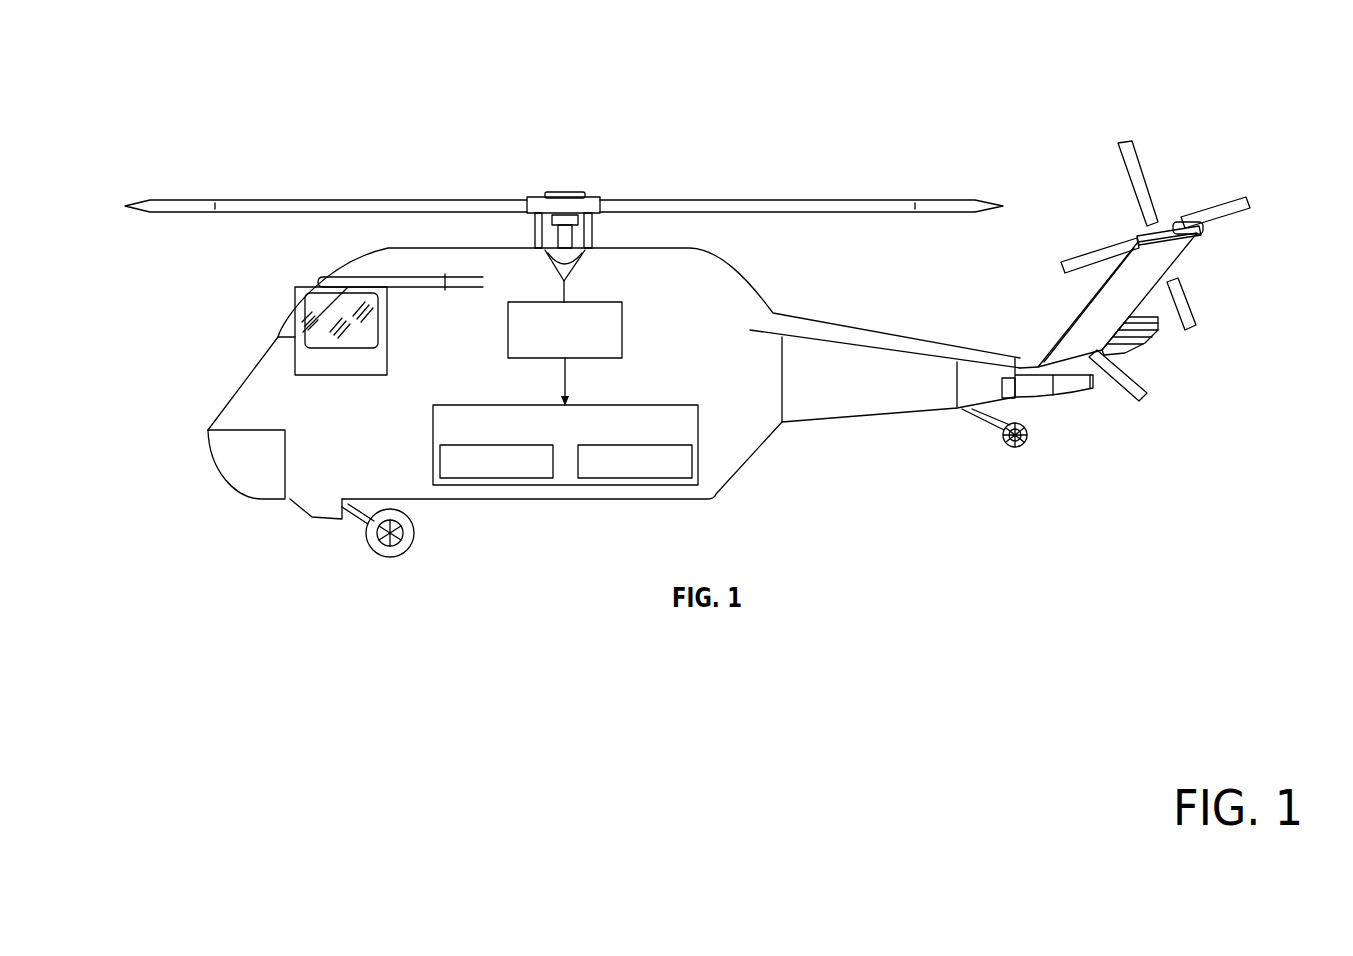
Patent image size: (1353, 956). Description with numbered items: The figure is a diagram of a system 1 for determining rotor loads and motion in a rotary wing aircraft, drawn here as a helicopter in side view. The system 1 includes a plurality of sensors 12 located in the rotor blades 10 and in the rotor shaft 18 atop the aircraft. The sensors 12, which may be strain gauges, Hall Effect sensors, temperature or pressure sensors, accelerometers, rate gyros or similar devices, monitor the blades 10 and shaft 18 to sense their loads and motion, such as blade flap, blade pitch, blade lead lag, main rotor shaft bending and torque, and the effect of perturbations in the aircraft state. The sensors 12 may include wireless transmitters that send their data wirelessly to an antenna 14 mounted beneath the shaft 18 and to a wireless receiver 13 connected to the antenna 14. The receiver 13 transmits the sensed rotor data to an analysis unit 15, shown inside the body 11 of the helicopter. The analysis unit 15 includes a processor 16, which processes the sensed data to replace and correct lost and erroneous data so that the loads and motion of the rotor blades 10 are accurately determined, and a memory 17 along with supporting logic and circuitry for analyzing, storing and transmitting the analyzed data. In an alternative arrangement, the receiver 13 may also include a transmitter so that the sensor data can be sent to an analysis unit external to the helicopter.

The system 1 is at (219, 85).
The rotor blades 10 is at (875, 200).
The body 11 is at (625, 503).
The sensors 12 is at (357, 205).
The wireless receiver 13 is at (553, 297).
The antenna 14 is at (586, 262).
The analysis unit 15 is at (482, 400).
The processor 16 is at (490, 445).
The memory 17 is at (643, 445).
The rotor shaft 18 is at (597, 235).